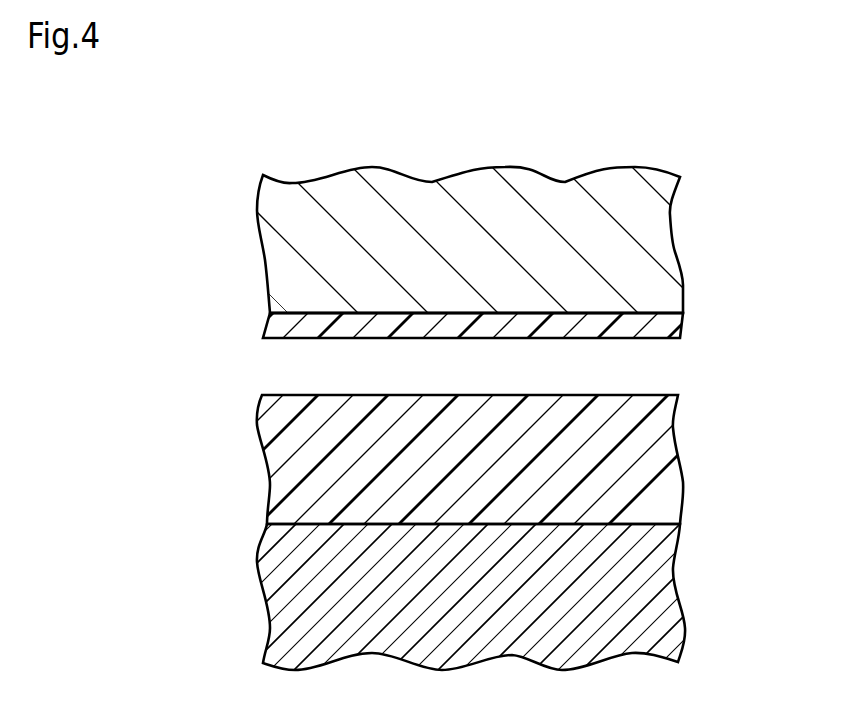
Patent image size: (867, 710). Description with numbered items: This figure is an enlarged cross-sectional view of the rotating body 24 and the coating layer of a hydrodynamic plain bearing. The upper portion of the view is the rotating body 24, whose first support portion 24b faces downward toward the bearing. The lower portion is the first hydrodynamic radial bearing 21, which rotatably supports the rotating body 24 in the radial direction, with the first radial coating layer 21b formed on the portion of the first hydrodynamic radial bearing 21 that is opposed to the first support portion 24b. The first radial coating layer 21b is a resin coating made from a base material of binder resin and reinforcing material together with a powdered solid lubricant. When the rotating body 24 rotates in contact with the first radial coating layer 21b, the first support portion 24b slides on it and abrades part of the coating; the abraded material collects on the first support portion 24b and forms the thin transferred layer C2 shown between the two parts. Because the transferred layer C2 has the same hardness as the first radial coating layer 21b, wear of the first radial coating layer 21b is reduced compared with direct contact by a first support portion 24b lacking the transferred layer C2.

The rotating body 24 is at (662, 212).
The first support portion 24b is at (673, 258).
The transferred layer C2 is at (675, 322).
The first radial coating layer 21b is at (667, 417).
The first hydrodynamic radial bearing 21 is at (672, 592).